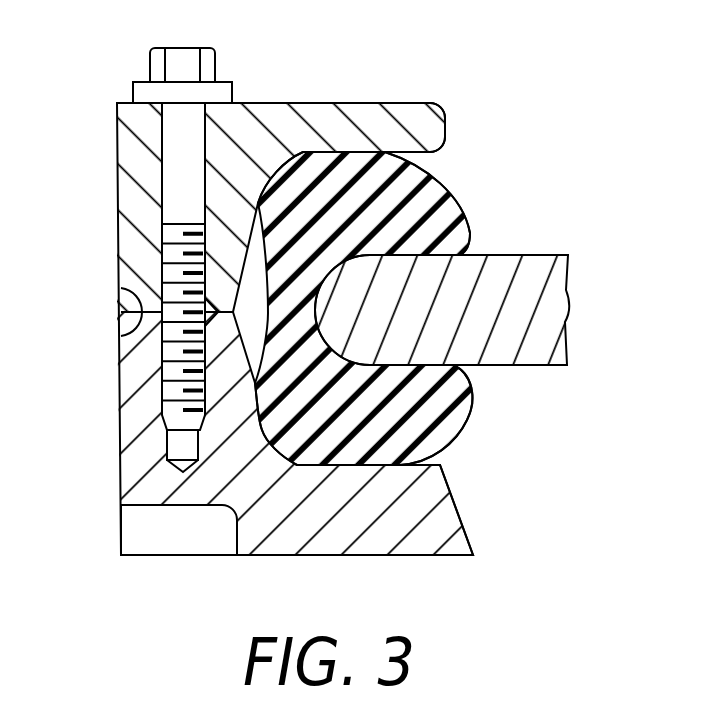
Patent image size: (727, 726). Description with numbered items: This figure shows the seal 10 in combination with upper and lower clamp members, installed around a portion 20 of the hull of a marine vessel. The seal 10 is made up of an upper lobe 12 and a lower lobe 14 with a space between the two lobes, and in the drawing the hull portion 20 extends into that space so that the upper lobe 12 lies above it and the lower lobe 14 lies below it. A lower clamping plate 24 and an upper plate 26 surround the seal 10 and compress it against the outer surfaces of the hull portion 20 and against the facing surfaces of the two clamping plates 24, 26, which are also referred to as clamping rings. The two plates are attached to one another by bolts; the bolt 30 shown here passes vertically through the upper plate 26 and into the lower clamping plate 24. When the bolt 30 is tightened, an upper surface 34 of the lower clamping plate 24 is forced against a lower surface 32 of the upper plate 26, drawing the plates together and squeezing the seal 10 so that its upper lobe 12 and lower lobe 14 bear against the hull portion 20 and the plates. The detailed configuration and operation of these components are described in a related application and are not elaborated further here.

The seal 10 is at (403, 246).
The upper lobe 12 is at (447, 215).
The lower lobe 14 is at (430, 417).
The portion of a hull 20 is at (552, 302).
The lower clamping plate 24 is at (403, 547).
The upper plate 26 is at (413, 117).
The bolt 30 is at (173, 167).
The lower surface 32 is at (128, 328).
The upper surface 34 is at (135, 292).